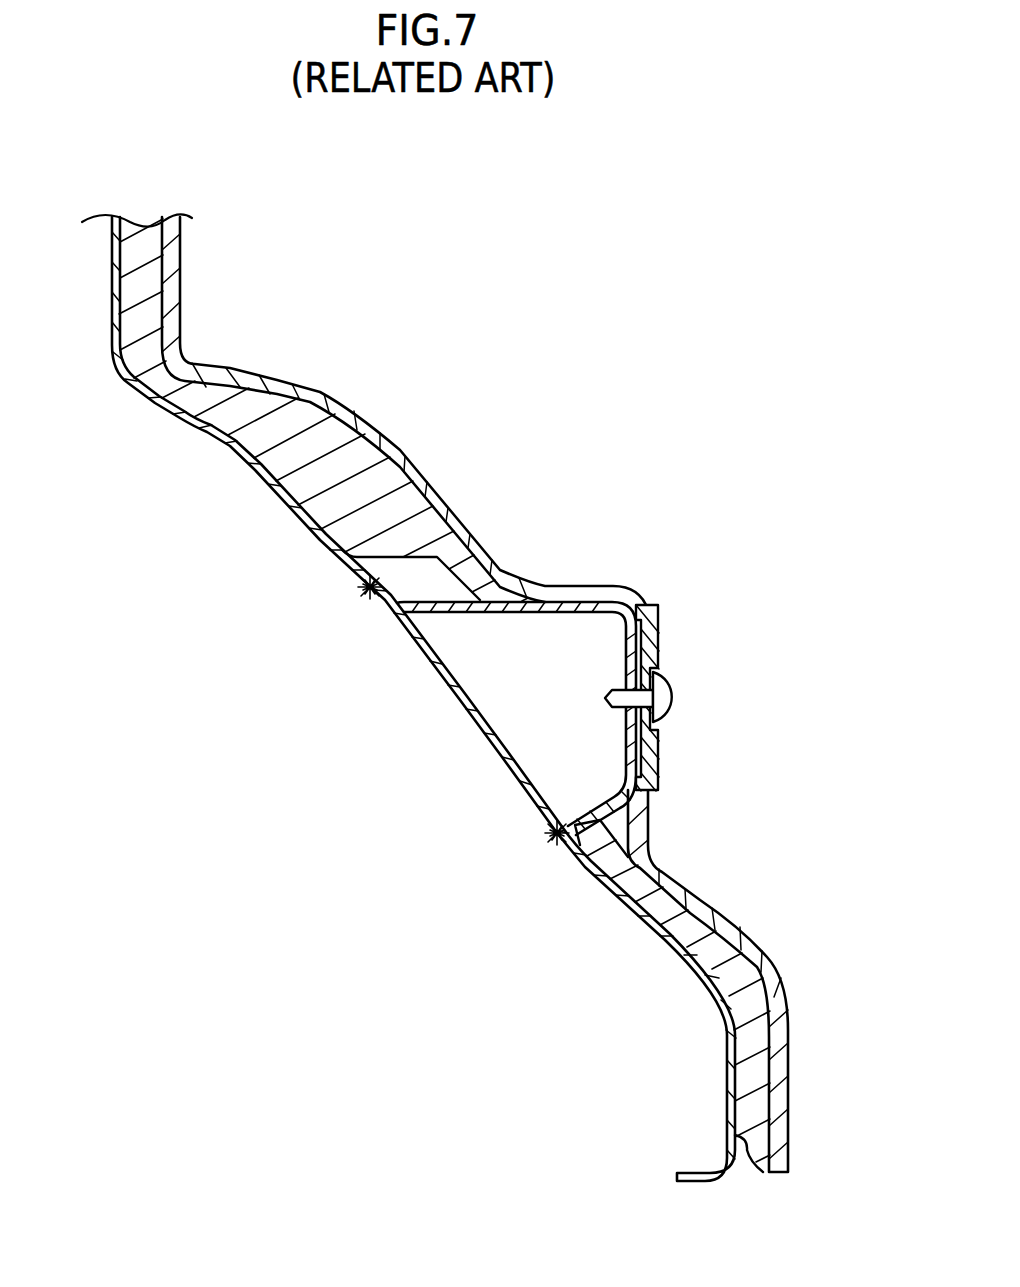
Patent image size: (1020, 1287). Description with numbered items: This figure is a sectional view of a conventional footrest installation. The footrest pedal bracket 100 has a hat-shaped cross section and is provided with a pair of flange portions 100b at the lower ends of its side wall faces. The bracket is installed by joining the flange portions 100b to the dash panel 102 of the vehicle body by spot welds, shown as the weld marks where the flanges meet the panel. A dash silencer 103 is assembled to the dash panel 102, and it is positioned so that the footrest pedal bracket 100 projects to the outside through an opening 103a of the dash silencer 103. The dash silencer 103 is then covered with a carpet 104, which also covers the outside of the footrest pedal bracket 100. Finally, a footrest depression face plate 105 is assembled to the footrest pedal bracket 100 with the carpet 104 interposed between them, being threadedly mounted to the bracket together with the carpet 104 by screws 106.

The footrest pedal bracket 100 is at (593, 792).
The flange portions 100b is at (364, 578).
The dash panel 102 is at (460, 697).
The dash silencer 103 is at (278, 421).
The opening 103a is at (586, 822).
The carpet 104 is at (370, 432).
The footrest depression face plate 105 is at (662, 627).
The screws 106 is at (668, 693).